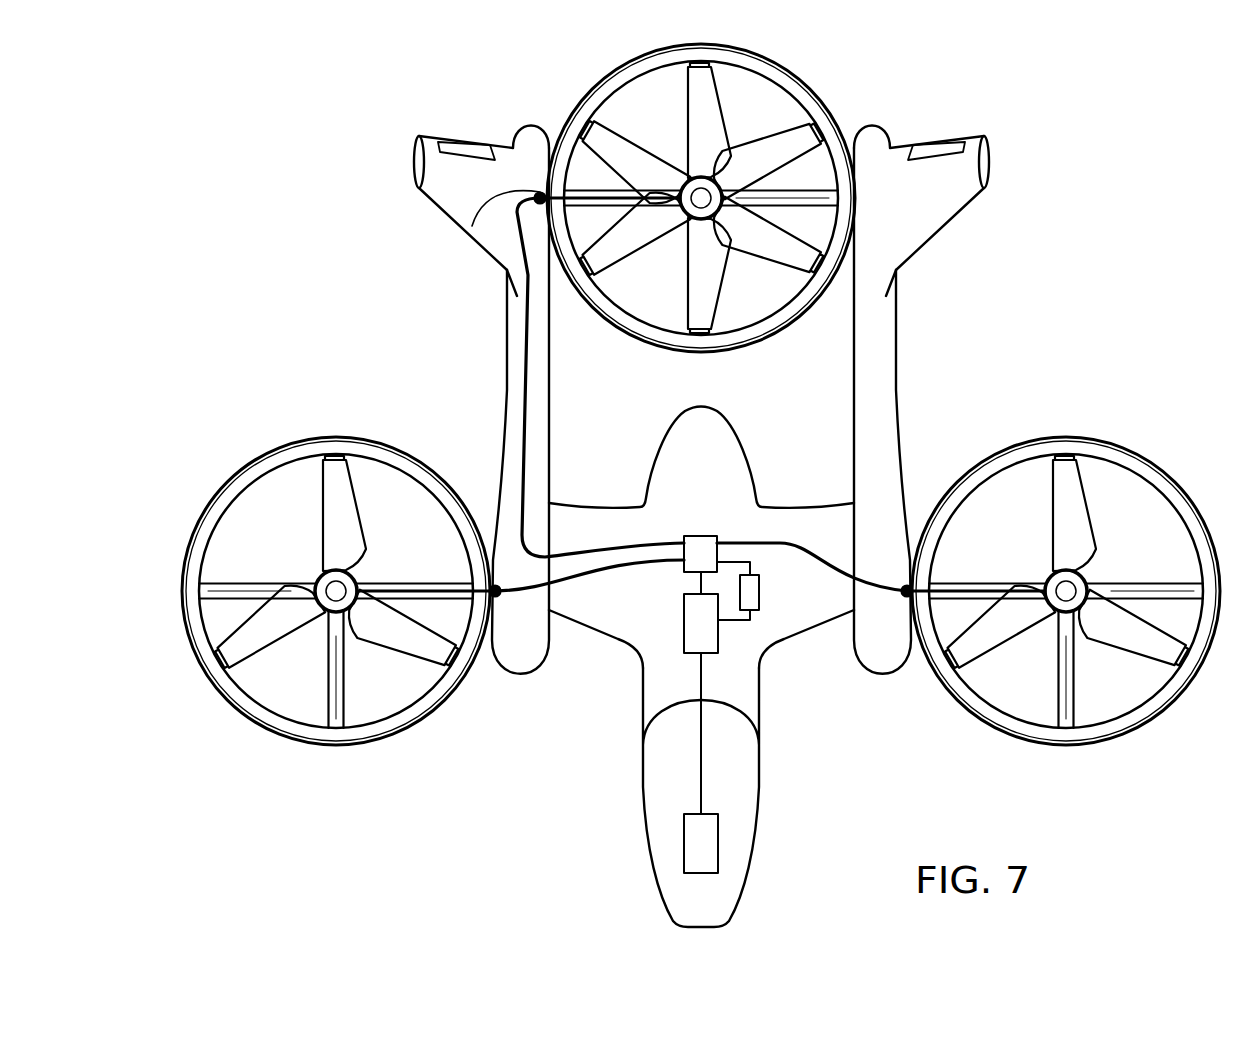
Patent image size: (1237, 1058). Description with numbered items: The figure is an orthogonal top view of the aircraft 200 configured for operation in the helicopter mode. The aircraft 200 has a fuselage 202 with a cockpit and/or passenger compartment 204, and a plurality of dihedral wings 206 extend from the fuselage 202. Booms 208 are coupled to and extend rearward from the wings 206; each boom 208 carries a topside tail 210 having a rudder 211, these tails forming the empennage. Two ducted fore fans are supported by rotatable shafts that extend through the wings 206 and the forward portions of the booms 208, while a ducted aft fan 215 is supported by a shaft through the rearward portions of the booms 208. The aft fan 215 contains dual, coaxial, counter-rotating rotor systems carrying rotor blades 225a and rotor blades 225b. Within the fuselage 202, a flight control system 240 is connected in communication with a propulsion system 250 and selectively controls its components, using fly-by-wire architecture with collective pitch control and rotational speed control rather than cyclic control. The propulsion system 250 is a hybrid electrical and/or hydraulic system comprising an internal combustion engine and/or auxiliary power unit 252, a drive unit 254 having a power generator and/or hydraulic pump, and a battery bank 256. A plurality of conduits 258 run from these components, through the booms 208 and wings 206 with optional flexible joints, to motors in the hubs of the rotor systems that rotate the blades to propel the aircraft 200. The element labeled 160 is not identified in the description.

The aircraft 200 is at (248, 171).
The rotor mount joint 160 is at (470, 227).
The fuselage 202 is at (750, 448).
The cockpit and/or passenger compartment 204 is at (660, 903).
The wings 206 is at (590, 627).
The booms 208 is at (506, 322).
The topside tail 210 is at (412, 160).
The rudder 211 is at (468, 143).
The aft fan 215 is at (691, 184).
The rotor blades 225a is at (752, 252).
The rotor blades 225b is at (637, 145).
The flight control system 240 is at (683, 843).
The propulsion system 250 is at (708, 645).
The internal combustion engine and/or auxiliary power unit 252 is at (683, 640).
The drive unit 254 is at (700, 535).
The battery bank 256 is at (760, 592).
The conduits 258 is at (530, 373).